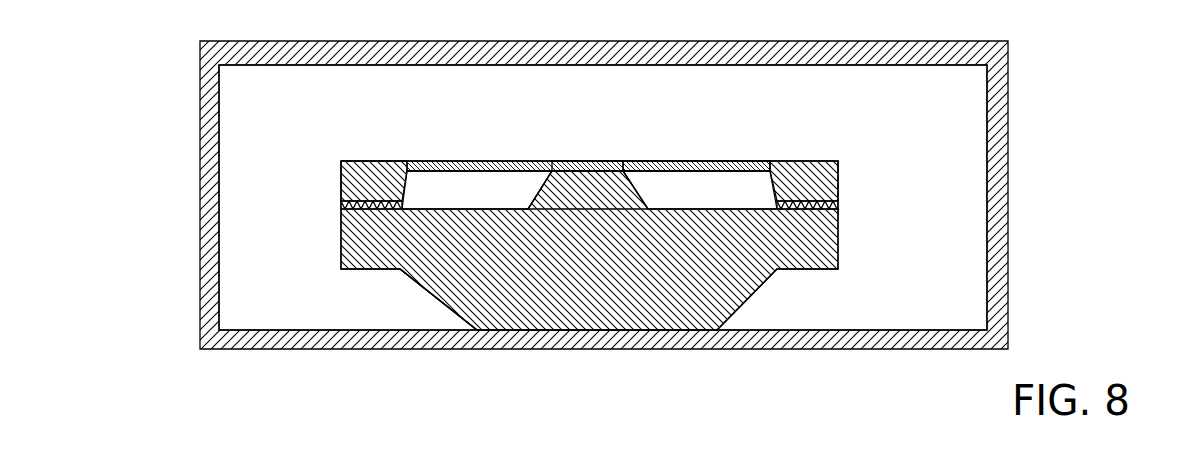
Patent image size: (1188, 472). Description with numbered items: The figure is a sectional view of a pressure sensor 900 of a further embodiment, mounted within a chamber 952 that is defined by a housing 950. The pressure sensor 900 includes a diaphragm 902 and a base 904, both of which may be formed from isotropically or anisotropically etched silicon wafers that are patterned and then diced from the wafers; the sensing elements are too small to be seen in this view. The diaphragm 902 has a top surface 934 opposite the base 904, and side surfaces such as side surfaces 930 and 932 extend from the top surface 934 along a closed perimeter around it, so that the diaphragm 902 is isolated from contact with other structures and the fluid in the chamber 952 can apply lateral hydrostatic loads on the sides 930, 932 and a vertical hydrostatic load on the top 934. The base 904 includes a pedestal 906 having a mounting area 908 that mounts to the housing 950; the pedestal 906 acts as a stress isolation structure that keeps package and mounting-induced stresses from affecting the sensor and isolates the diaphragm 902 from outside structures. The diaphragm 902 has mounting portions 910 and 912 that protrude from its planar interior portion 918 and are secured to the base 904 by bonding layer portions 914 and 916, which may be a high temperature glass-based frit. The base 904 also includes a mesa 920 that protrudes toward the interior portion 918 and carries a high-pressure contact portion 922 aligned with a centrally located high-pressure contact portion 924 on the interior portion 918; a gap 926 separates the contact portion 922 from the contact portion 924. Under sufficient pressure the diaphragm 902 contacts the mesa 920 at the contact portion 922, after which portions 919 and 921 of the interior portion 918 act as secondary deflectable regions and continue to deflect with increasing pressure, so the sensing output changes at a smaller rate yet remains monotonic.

The pressure sensor 900 is at (862, 146).
The diaphragm 902 is at (341, 178).
The base 904 is at (341, 262).
The pedestal 906 is at (433, 303).
The mounting area 908 is at (505, 343).
The mounting portion 910 is at (370, 193).
The mounting portion 912 is at (806, 185).
The bonding layer portion 914 is at (341, 205).
The bonding layer portion 916 is at (838, 204).
The interior portion 918 is at (510, 165).
The portion of interior portion 919 is at (472, 163).
The mesa 920 is at (548, 167).
The portion of interior portion 921 is at (674, 171).
The high-pressure contact portion 922 is at (626, 174).
The high-pressure contact portion 924 is at (592, 165).
The gap 926 is at (612, 168).
The side surface 930 is at (330, 161).
The side surface 932 is at (838, 178).
The top surface 934 is at (742, 168).
The housing 950 is at (219, 348).
The chamber 952 is at (218, 300).